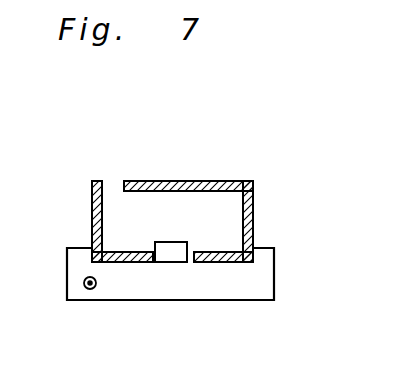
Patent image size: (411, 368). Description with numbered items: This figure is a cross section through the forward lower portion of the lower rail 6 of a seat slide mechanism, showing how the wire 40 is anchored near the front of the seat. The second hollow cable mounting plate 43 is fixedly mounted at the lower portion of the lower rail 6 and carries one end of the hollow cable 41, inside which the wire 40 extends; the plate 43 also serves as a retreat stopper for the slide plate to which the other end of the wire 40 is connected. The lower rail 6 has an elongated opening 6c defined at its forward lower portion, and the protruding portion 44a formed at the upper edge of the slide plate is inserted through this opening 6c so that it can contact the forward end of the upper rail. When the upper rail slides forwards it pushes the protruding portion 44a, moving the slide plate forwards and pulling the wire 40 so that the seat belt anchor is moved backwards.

The lower rail 6 is at (92, 181).
The elongated opening 6c is at (152, 252).
The protruding portion 44a is at (173, 242).
The second hollow cable mounting plate 43 is at (66, 270).
The wire 40 is at (95, 288).
The hollow cable 41 is at (87, 288).